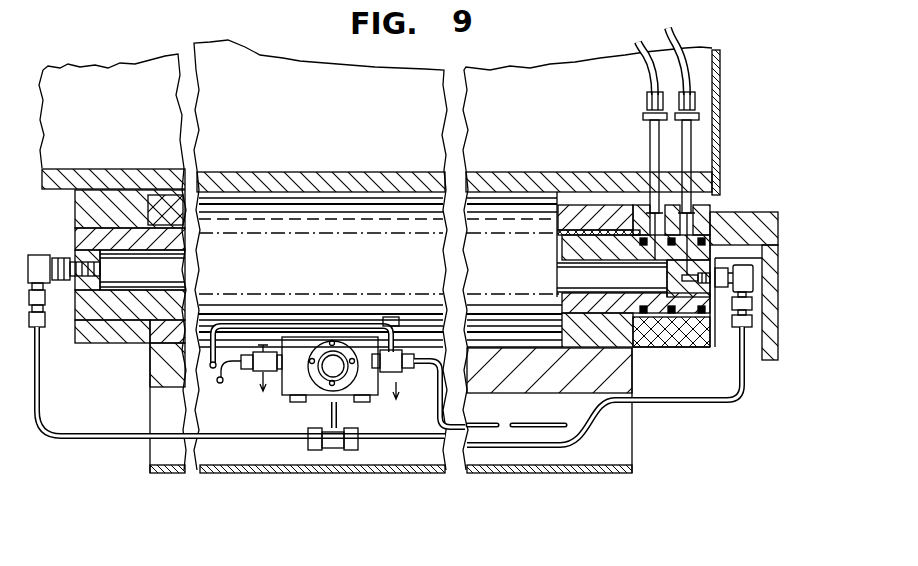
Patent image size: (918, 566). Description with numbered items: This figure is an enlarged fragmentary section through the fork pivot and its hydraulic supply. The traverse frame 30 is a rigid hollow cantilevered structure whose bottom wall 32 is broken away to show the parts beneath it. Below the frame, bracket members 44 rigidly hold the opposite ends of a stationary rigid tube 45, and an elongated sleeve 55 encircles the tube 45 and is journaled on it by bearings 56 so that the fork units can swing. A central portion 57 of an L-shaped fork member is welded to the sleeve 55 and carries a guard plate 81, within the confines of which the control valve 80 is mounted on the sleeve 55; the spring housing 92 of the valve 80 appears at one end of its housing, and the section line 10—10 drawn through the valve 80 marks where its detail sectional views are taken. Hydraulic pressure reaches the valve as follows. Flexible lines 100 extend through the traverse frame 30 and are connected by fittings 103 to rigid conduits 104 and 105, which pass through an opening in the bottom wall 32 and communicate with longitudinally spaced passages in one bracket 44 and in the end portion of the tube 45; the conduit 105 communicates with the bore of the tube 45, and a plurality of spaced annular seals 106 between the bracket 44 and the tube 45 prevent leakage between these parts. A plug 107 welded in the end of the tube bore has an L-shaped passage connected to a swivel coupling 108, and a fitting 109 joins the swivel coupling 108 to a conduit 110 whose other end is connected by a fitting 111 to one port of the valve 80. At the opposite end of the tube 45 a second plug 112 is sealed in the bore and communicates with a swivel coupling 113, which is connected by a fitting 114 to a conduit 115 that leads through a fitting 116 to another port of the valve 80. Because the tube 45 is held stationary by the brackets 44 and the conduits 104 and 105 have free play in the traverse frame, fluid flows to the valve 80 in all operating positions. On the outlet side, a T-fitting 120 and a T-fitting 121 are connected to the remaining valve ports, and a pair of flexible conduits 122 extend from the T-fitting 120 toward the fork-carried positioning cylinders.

The traverse frame 30 is at (275, 65).
The bottom wall 32 is at (325, 178).
The bearings 56 is at (160, 186).
The sleeve 55 is at (565, 212).
The bracket members 44 is at (85, 208).
The tube structure 45 is at (115, 298).
The central portion 57 is at (180, 355).
The guard plate 81 is at (556, 473).
The plug 112 is at (72, 255).
The swivel coupling 113 is at (62, 285).
The fitting 114 is at (40, 328).
The conduit 115 is at (95, 440).
The flexible conduits 122 is at (366, 322).
The T-fitting 121 is at (247, 372).
The T-fitting 120 is at (402, 350).
The flow direction 10 is at (330, 399).
The control valve 80 is at (317, 397).
The spring housing 92 is at (332, 353).
The fitting 116 is at (315, 452).
The fitting 111 is at (340, 452).
The annular seals 106 is at (698, 348).
The flexible lines 100 is at (660, 33).
The fittings 103 is at (697, 97).
The rigid conduit 105 is at (648, 143).
The rigid conduit 104 is at (690, 147).
The plug 107 is at (715, 242).
The swivel coupling 108 is at (747, 278).
The fitting 109 is at (752, 318).
The conduit 110 is at (685, 405).